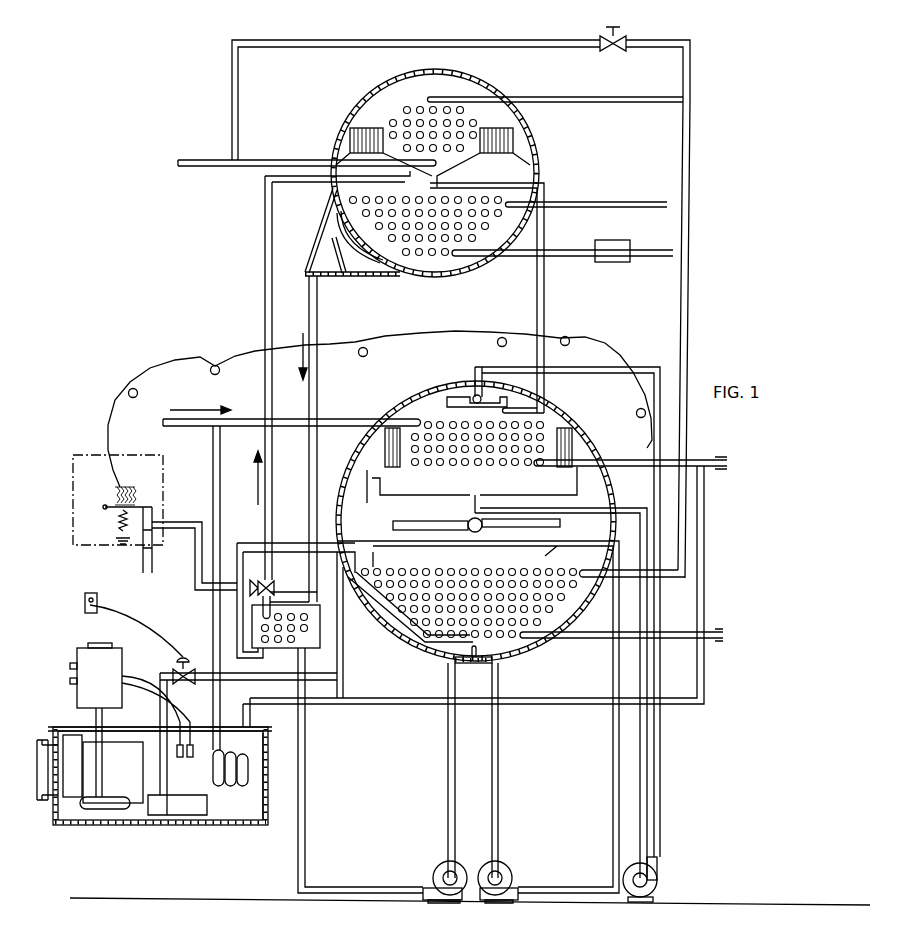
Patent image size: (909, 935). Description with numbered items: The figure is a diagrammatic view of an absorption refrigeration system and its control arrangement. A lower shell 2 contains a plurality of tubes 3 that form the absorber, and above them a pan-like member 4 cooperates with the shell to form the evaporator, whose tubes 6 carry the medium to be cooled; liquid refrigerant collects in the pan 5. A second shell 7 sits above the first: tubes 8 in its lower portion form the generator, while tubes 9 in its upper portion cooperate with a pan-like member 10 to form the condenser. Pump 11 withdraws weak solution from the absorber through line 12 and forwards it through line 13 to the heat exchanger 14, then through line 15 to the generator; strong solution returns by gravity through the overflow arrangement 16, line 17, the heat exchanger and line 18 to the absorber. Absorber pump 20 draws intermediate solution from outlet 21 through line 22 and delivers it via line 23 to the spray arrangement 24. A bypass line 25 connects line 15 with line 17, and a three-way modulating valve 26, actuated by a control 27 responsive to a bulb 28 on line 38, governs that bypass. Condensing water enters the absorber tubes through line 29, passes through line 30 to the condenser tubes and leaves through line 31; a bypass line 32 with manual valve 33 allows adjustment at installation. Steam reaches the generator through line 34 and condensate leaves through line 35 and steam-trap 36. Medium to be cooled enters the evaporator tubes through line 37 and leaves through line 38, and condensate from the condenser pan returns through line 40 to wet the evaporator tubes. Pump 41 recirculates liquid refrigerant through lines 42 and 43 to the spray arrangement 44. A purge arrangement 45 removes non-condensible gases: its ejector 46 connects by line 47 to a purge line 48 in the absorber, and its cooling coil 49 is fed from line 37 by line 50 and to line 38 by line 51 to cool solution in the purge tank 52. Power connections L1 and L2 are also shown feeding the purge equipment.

The shell 2 is at (543, 640).
The tubes 3 is at (557, 590).
The pan-like member 4 is at (566, 470).
The pan 5 is at (413, 496).
The tubes 6 is at (503, 464).
The second shell 7 is at (476, 268).
The tubes 8 is at (480, 228).
The tubes 9 is at (468, 126).
The pan-like member 10 is at (459, 165).
The pump 11 is at (435, 872).
The line 12 is at (449, 816).
The line 13 is at (305, 820).
The heat exchanger 14 is at (279, 648).
The line 15 is at (272, 502).
The overflow arrangement 16 is at (326, 224).
The line 17 is at (316, 380).
The line 18 is at (297, 548).
The pump 20 is at (512, 876).
The outlet 21 is at (487, 666).
The line 22 is at (499, 816).
The line 23 is at (614, 805).
The spray arrangement 24 is at (471, 519).
The bypass line 25 is at (293, 590).
The three-way modulating valve 26 is at (268, 580).
The control 27 is at (163, 490).
The bulb 28 is at (624, 452).
The line 29 is at (718, 632).
The line 30 is at (687, 433).
The line 31 is at (211, 160).
The bypass line 32 is at (318, 41).
The manual valve 33 is at (629, 47).
The line 34 is at (582, 203).
The line 35 is at (535, 257).
The steam-trap 36 is at (629, 251).
The line 37 is at (229, 421).
The line 38 is at (716, 463).
The line 40 is at (545, 238).
The pump 41 is at (653, 873).
The line 42 is at (648, 790).
The line 43 is at (661, 810).
The spray arrangement 44 is at (452, 395).
The purge arrangement 45 is at (190, 825).
The ejector 46 is at (184, 806).
The line 47 is at (345, 659).
The purge line 48 is at (478, 653).
The cooling coil 49 is at (225, 784).
The line 50 is at (212, 631).
The line 51 is at (704, 589).
The purge tank 52 is at (268, 802).
The power line L1 is at (69, 667).
The power line L2 is at (69, 684).